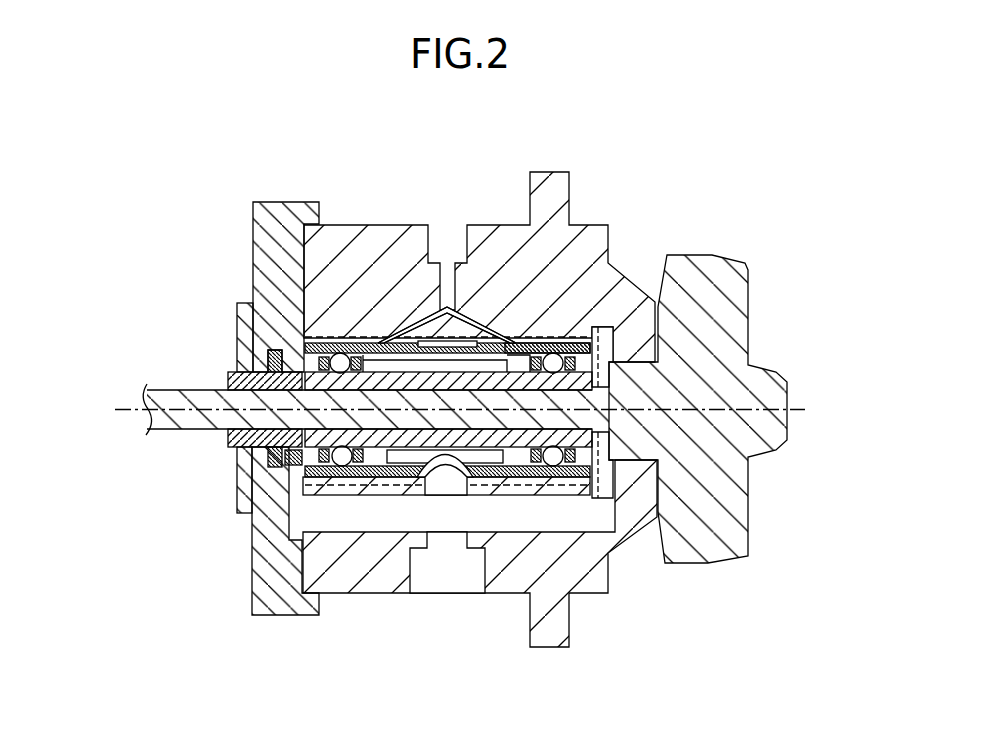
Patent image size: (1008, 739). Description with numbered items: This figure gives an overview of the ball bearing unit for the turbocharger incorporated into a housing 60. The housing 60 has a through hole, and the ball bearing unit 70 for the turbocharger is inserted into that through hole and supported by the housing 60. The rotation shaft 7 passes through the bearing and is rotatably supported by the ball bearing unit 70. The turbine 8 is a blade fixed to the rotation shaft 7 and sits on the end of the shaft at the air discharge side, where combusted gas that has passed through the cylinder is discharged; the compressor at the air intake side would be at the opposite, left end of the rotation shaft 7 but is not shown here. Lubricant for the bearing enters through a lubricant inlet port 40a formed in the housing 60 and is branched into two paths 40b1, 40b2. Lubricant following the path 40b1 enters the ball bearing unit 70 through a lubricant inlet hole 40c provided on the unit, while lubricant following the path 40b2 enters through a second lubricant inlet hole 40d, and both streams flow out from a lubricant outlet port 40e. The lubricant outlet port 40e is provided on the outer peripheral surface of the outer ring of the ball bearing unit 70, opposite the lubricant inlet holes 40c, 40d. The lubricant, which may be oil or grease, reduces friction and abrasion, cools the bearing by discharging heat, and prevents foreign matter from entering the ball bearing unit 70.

The rotation shaft 7 is at (158, 390).
The turbine 8 is at (750, 309).
The housing 60 is at (546, 172).
The ball bearing unit for the turbocharger 70 is at (352, 487).
The lubricant inlet port 40a is at (445, 308).
The path 40b1 is at (417, 338).
The path 40b2 is at (476, 335).
The lubricant inlet hole 40c is at (363, 343).
The lubricant inlet hole 40d is at (512, 343).
The lubricant outlet port 40e is at (440, 495).